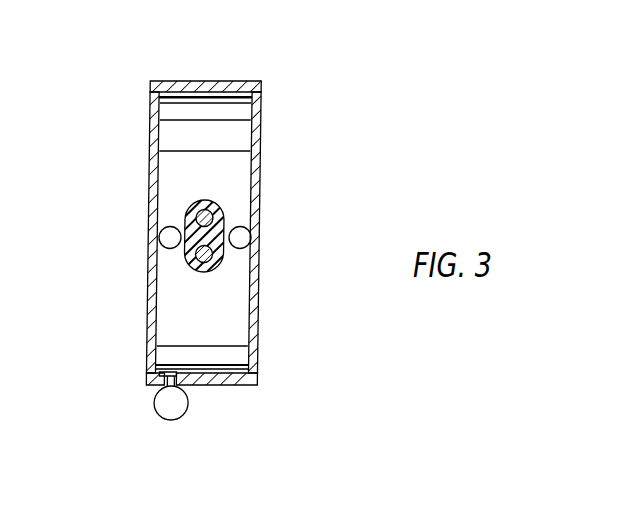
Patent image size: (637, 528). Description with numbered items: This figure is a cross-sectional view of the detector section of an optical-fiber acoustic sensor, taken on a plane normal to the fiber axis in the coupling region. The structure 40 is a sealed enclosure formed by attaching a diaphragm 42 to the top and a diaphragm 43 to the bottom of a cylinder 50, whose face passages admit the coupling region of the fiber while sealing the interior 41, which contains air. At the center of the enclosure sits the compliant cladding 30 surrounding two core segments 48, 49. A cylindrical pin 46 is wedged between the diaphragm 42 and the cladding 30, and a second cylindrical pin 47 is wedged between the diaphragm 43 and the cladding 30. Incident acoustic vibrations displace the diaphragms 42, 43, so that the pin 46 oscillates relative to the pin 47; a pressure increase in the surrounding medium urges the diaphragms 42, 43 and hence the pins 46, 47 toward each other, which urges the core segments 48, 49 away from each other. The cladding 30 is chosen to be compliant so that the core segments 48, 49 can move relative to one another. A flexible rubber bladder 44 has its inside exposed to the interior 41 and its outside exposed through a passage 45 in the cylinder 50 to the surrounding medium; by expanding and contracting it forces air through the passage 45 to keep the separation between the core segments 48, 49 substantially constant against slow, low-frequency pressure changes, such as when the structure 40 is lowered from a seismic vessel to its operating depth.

The compliant cladding 30 is at (218, 209).
The structure 40 is at (207, 229).
The interior 41 is at (185, 103).
The diaphragm 42 is at (259, 208).
The diaphragm 43 is at (150, 187).
The rubber bladder 44 is at (158, 414).
The passage 45 is at (156, 378).
The cylindrical pin 46 is at (243, 240).
The cylindrical pin 47 is at (168, 243).
The core segment 48 is at (204, 218).
The core segment 49 is at (204, 254).
The cylinder 50 is at (230, 81).